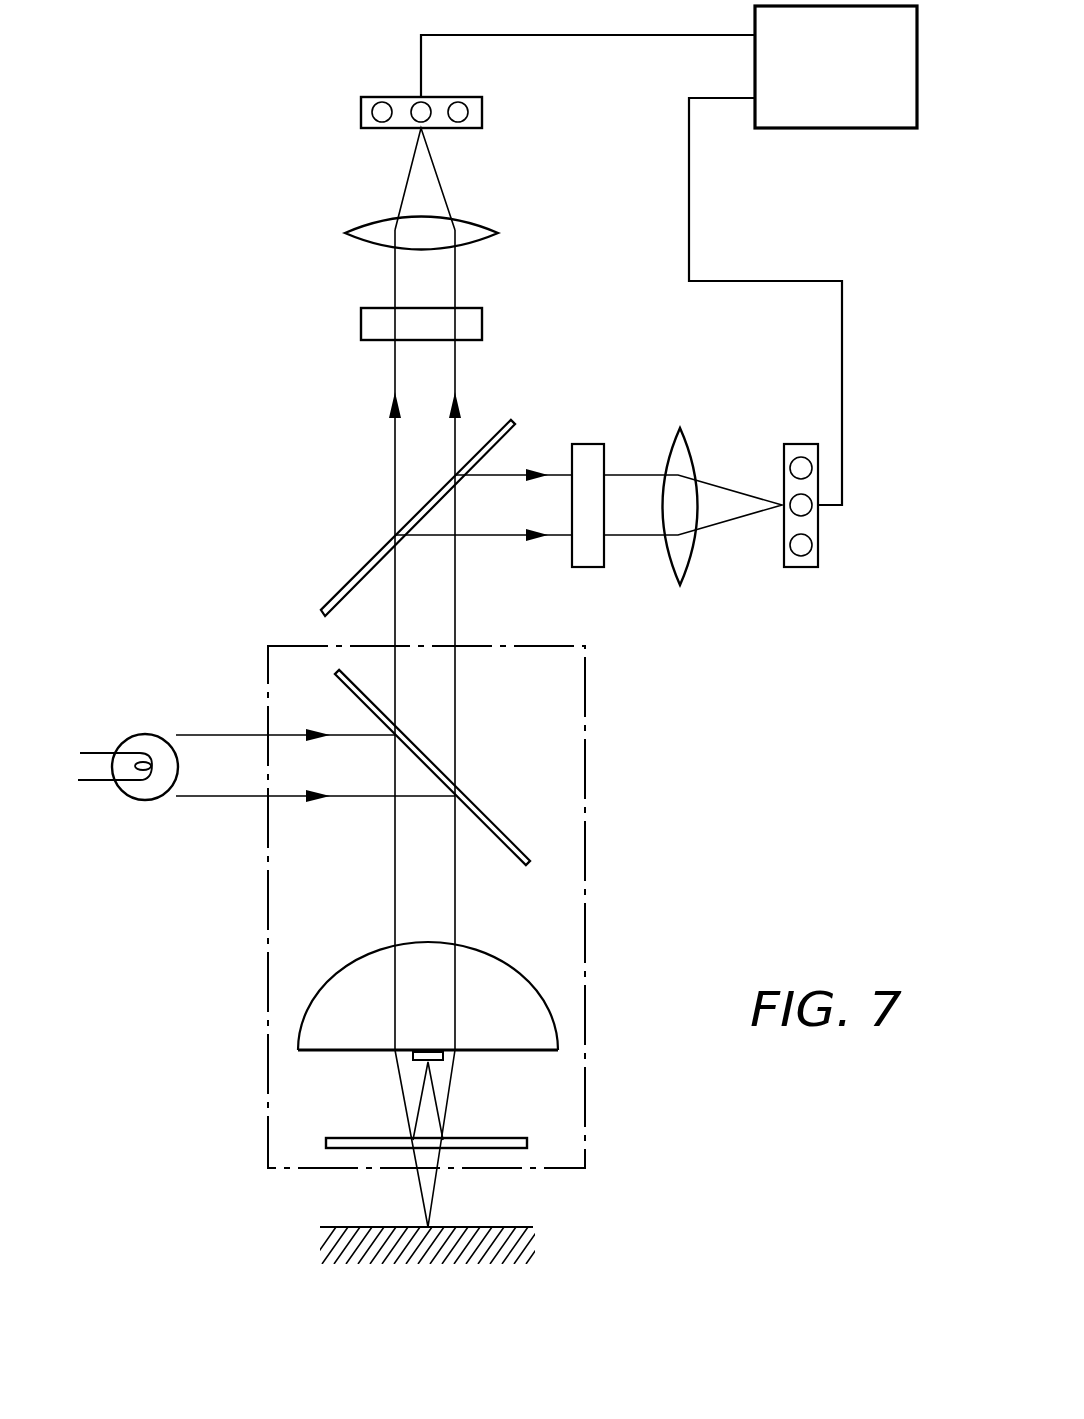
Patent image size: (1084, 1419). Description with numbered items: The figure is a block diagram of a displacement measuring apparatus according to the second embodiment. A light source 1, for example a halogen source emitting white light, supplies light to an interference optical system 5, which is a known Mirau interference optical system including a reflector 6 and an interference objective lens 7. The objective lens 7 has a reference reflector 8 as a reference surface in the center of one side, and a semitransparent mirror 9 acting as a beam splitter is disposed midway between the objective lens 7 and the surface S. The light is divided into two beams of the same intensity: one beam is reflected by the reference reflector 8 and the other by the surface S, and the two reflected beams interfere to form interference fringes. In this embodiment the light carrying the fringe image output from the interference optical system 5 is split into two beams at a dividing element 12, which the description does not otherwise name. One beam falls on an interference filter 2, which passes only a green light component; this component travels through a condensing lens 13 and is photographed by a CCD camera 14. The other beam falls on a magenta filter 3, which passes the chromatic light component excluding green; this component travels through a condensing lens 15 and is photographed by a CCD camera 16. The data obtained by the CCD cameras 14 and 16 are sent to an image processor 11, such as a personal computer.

The light source 1 is at (143, 802).
The interference filter 2 is at (360, 322).
The magenta filter 3 is at (588, 444).
The interference optical system 5 is at (585, 888).
The reflector 6 is at (483, 812).
The interference objective lens 7 is at (500, 972).
The reference reflector 8 is at (440, 1060).
The semitransparent mirror 9 is at (510, 1138).
The image processor 11 is at (918, 68).
The beam splitter 12 is at (378, 553).
The condensing lens 13 is at (345, 233).
The CCD camera 14 is at (360, 107).
The condensing lens 15 is at (681, 428).
The CCD camera 16 is at (800, 444).
The surface S is at (503, 1225).